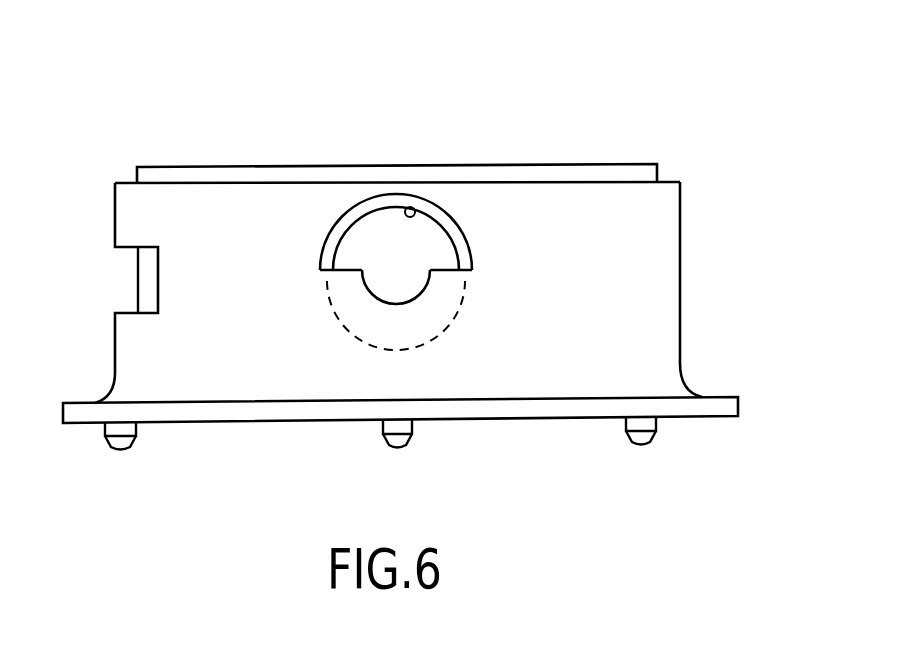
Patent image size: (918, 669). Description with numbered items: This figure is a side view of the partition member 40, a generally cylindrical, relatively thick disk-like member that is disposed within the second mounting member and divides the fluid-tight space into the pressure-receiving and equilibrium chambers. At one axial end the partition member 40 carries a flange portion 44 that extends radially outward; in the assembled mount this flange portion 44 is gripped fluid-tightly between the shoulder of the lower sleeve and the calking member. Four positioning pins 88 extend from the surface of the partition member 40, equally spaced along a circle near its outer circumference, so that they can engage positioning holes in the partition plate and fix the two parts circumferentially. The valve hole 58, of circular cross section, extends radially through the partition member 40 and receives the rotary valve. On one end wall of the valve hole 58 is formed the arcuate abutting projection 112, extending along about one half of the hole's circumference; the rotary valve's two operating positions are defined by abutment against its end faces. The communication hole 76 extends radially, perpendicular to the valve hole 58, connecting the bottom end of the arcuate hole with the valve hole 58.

The partition member 40 is at (648, 97).
The flange portion 44 is at (312, 411).
The valve hole 58 is at (413, 209).
The communication hole 76 is at (147, 252).
The positioning pins 88 is at (120, 448).
The abutting projection 112 is at (370, 308).